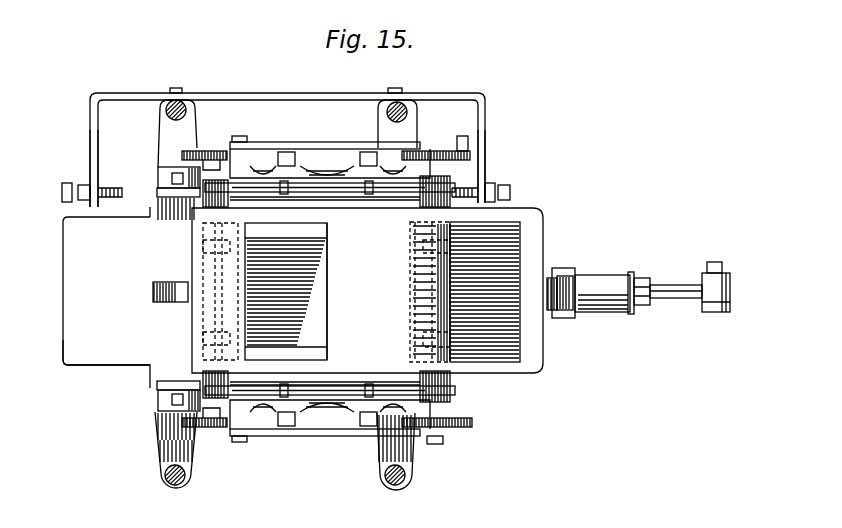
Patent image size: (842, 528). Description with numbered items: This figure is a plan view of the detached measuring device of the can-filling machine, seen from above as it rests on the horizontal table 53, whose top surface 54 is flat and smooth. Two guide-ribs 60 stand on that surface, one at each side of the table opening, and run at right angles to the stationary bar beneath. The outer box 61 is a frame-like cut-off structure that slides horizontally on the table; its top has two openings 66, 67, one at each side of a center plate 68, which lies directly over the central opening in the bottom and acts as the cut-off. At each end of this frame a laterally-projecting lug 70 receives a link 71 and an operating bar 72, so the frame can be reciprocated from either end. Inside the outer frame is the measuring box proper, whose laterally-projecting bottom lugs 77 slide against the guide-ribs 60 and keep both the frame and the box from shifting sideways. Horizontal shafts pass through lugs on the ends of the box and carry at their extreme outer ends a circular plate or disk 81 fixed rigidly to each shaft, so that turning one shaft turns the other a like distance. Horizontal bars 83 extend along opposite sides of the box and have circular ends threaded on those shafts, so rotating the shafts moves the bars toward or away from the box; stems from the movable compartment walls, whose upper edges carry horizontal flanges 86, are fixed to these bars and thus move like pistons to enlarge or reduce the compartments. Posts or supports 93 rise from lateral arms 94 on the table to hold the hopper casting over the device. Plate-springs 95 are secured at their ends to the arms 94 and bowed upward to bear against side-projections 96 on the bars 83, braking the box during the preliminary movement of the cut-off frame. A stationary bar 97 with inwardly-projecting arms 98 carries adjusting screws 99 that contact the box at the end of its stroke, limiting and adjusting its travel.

The horizontal table 53 is at (83, 369).
The top surface 54 is at (125, 297).
The guide-ribs 60 is at (177, 196).
The outer box 61 is at (505, 372).
The top opening 66 is at (508, 258).
The top opening 67 is at (310, 331).
The center plate 68 is at (353, 291).
The laterally-projecting lug 70 is at (564, 290).
The link 71 is at (607, 284).
The operating bar 72 is at (712, 308).
The bottom lugs 77 is at (343, 200).
The circular plate or disk 81 is at (470, 434).
The horizontal bars 83 is at (333, 180).
The horizontal flanges 86 is at (305, 232).
The posts or supports 93 is at (170, 102).
The lateral arms 94 is at (182, 131).
The plate-springs 95 is at (161, 176).
The side-projections 96 is at (297, 165).
The stationary bar 97 is at (262, 96).
The inwardly-projecting arms 98 is at (90, 139).
The adjusting screws 99 is at (63, 194).